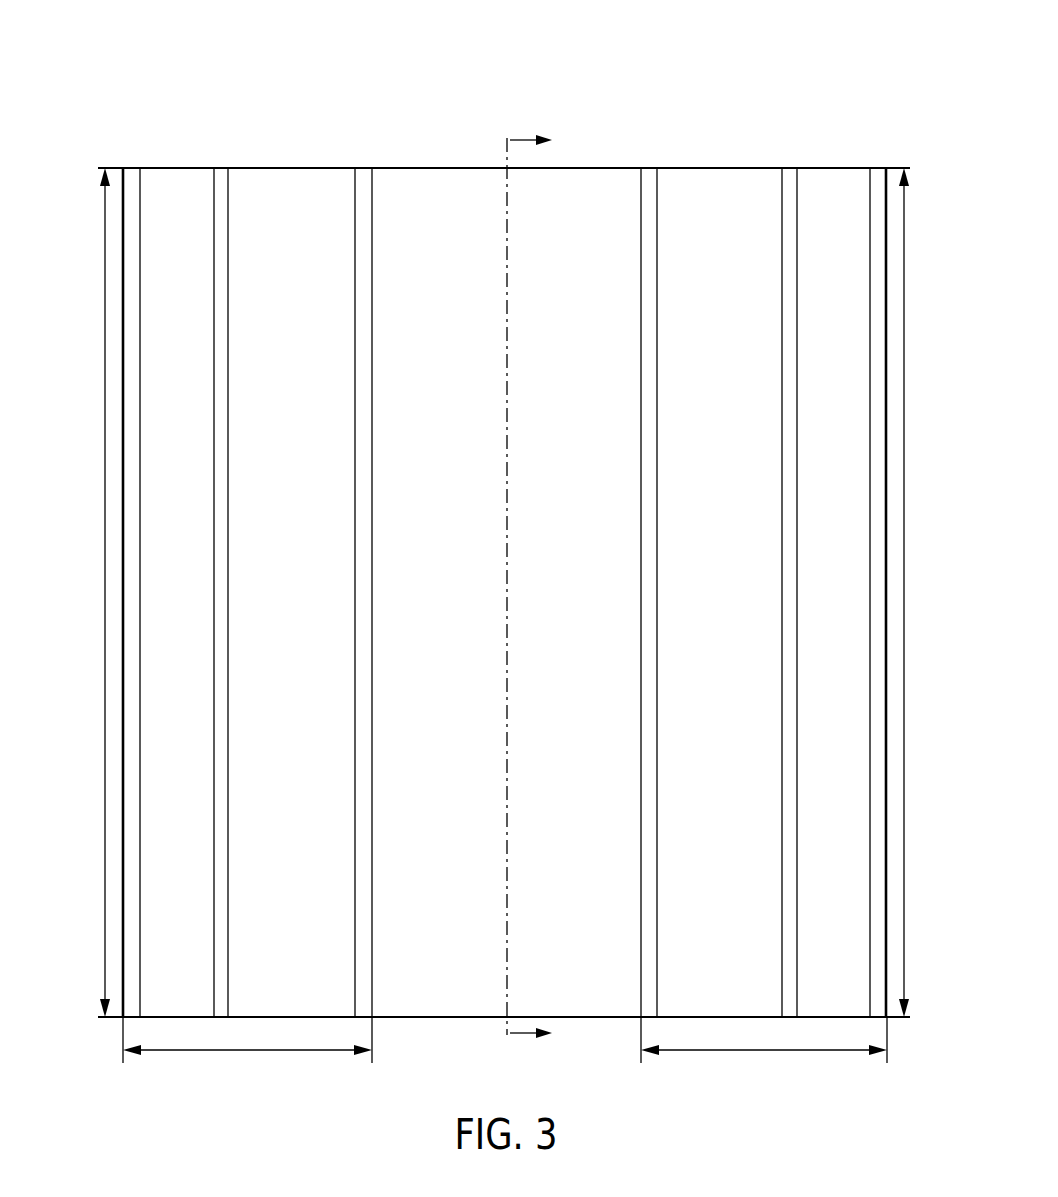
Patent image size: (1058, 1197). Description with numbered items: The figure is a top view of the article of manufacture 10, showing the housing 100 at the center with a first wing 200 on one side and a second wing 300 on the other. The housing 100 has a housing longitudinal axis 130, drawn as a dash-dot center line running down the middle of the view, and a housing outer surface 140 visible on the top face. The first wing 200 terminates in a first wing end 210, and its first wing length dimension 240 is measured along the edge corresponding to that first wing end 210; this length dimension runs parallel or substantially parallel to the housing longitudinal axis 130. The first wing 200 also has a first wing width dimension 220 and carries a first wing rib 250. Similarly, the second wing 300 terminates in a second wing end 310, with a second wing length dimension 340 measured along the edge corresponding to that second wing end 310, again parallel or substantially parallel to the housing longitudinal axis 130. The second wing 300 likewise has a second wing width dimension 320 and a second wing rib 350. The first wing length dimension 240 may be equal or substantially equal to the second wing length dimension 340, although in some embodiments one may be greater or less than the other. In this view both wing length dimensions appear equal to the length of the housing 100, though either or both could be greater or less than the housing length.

The article of manufacture 10 is at (448, 72).
The housing 100 is at (615, 166).
The housing longitudinal axis 130 is at (516, 138).
The housing outer surface 140 is at (568, 517).
The first wing 200 is at (720, 180).
The first wing end 210 is at (885, 188).
The first wing width dimension 220 is at (702, 1052).
The first wing length dimension 240 is at (906, 440).
The first wing rib 250 is at (787, 325).
The second wing 300 is at (293, 178).
The second wing end 310 is at (128, 185).
The second wing width dimension 320 is at (307, 1052).
The second wing length dimension 340 is at (103, 465).
The second wing rib 350 is at (130, 325).